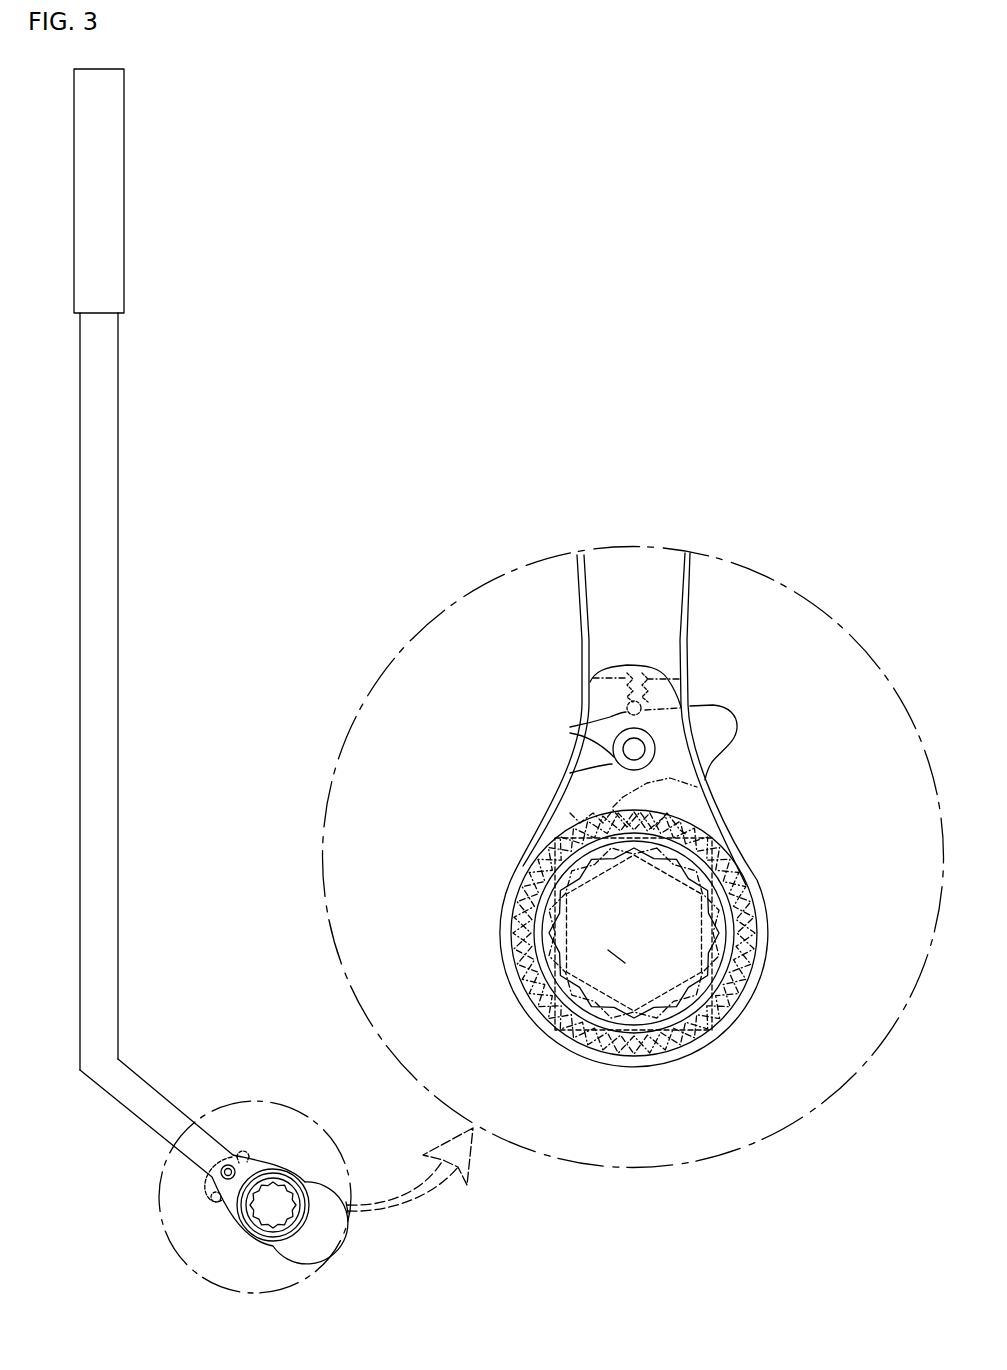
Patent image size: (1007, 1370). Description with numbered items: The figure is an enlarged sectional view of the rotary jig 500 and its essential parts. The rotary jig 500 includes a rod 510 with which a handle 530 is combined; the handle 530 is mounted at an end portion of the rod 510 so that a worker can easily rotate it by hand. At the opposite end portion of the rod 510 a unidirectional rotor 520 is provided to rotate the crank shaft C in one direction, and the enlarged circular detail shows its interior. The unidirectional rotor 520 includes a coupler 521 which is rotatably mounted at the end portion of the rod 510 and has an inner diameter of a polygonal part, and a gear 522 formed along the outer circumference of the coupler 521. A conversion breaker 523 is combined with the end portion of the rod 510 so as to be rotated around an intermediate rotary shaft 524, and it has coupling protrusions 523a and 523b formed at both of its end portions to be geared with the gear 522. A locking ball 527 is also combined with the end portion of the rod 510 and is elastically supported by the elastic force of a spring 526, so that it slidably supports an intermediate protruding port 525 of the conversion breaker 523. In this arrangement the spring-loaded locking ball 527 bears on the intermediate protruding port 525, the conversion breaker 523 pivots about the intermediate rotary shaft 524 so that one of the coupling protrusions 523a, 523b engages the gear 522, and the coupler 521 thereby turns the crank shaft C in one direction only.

The rotary jig 500 is at (131, 428).
The rod 510 is at (118, 630).
The unidirectional rotor 520 is at (219, 1220).
The coupler 521 is at (712, 960).
The gear 522 is at (743, 900).
The conversion breaker 523 is at (723, 722).
The coupling protrusion 523a is at (623, 798).
The coupling protrusion 523b is at (707, 782).
The intermediate rotary shaft 524 is at (612, 768).
The intermediate protruding port 525 is at (570, 733).
The spring 526 is at (590, 682).
The locking ball 527 is at (625, 712).
The handle 530 is at (124, 190).
The crank shaft C is at (615, 957).